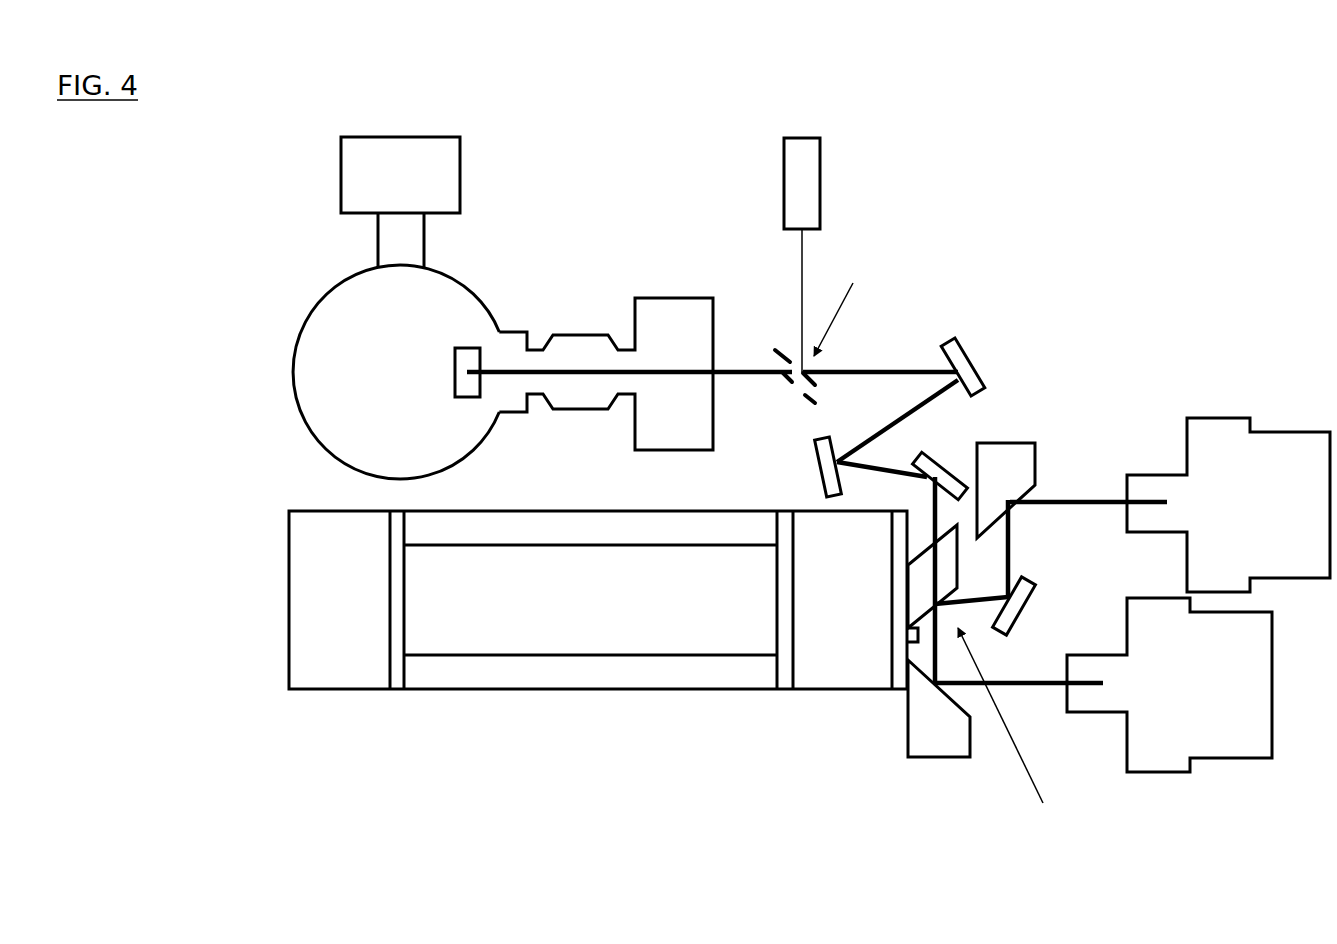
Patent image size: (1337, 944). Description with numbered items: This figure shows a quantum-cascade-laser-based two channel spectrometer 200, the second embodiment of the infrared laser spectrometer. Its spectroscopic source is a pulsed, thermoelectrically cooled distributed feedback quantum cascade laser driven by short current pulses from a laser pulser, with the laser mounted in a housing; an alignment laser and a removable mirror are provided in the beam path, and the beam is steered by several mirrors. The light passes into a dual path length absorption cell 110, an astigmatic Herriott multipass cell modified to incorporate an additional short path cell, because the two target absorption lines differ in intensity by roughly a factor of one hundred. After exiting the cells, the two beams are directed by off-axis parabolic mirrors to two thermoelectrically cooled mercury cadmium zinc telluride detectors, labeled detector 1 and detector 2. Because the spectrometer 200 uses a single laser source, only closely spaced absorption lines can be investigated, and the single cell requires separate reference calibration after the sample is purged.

The two channel spectrometer 200 is at (1196, 243).
The dual path length absorption cell 110 is at (600, 689).
The HgCdZnTe detector 1' 1 is at (1169, 685).
The HgCdZnTe detector 2' 2 is at (1228, 505).